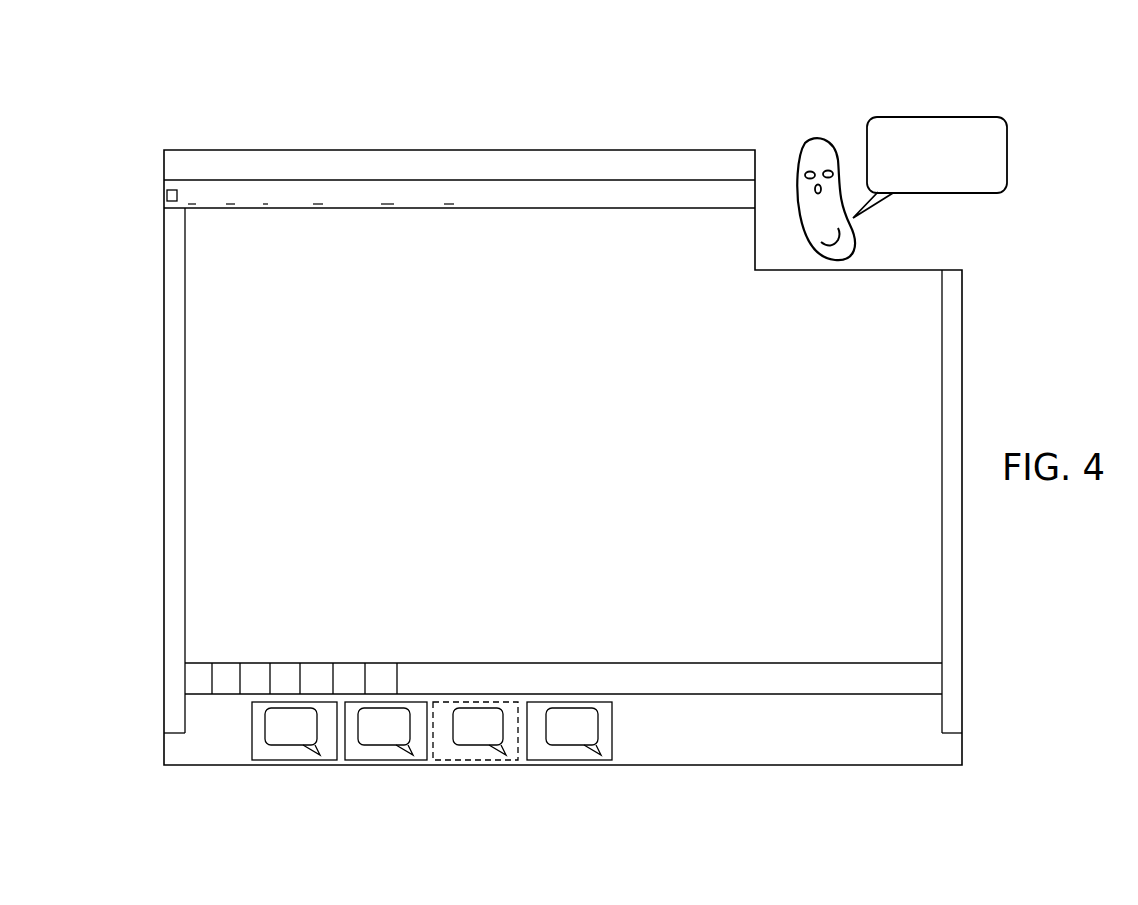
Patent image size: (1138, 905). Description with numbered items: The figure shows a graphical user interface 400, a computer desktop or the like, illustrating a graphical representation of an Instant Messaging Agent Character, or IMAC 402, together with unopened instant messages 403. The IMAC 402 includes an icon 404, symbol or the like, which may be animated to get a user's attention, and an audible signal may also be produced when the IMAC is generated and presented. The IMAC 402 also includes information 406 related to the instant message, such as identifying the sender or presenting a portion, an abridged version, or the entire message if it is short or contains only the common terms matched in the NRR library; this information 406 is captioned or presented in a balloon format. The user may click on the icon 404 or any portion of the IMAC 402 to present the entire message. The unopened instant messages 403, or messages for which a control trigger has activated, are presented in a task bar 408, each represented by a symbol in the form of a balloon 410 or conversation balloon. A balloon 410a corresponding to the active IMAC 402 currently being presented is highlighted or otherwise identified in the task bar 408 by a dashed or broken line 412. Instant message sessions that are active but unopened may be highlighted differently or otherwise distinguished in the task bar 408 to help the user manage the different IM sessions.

The graphical user interface 400 is at (292, 138).
The Instant Messaging Agent Character 402 is at (907, 156).
The unopened instant messages 403 is at (537, 745).
The icon 404 is at (798, 170).
The information related to the instant message 406 is at (950, 117).
The task bar 408 is at (165, 748).
The balloon 410 is at (297, 743).
The balloon corresponding to the active IMAC 410a is at (470, 740).
The dashed or broken line 412 is at (497, 763).